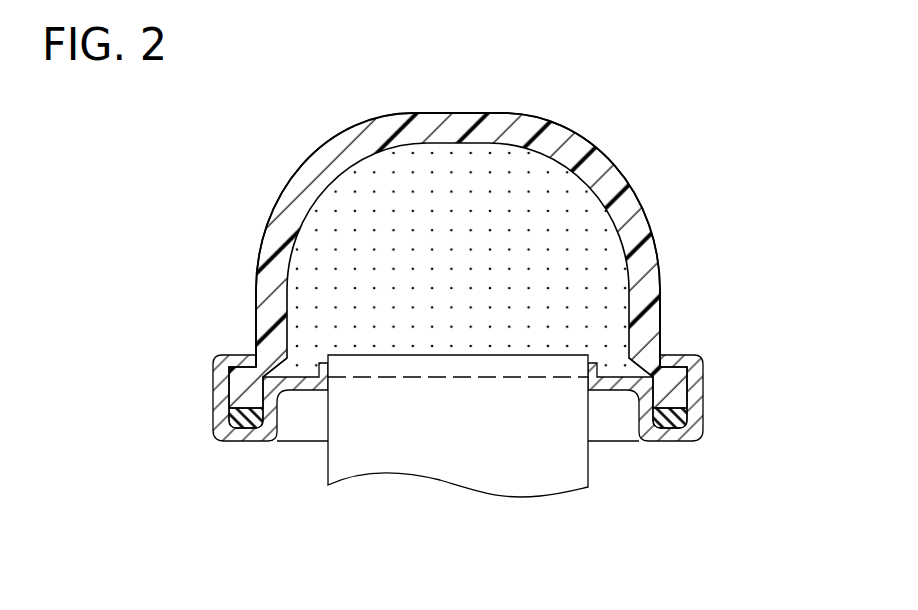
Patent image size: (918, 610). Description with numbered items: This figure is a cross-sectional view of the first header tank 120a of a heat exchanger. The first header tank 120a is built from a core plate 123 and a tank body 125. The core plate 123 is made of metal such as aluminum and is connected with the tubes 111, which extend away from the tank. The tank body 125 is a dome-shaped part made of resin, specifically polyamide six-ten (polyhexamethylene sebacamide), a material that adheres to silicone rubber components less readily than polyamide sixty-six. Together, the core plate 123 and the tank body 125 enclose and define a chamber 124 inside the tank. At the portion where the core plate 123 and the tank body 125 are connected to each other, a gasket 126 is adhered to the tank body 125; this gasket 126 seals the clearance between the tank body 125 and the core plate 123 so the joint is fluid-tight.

The first header tank 120a is at (552, 130).
The chamber 124 is at (412, 212).
The tank body 125 is at (636, 228).
The core plate 123 is at (618, 385).
The gasket 126 is at (675, 430).
The tubes 111 is at (588, 463).